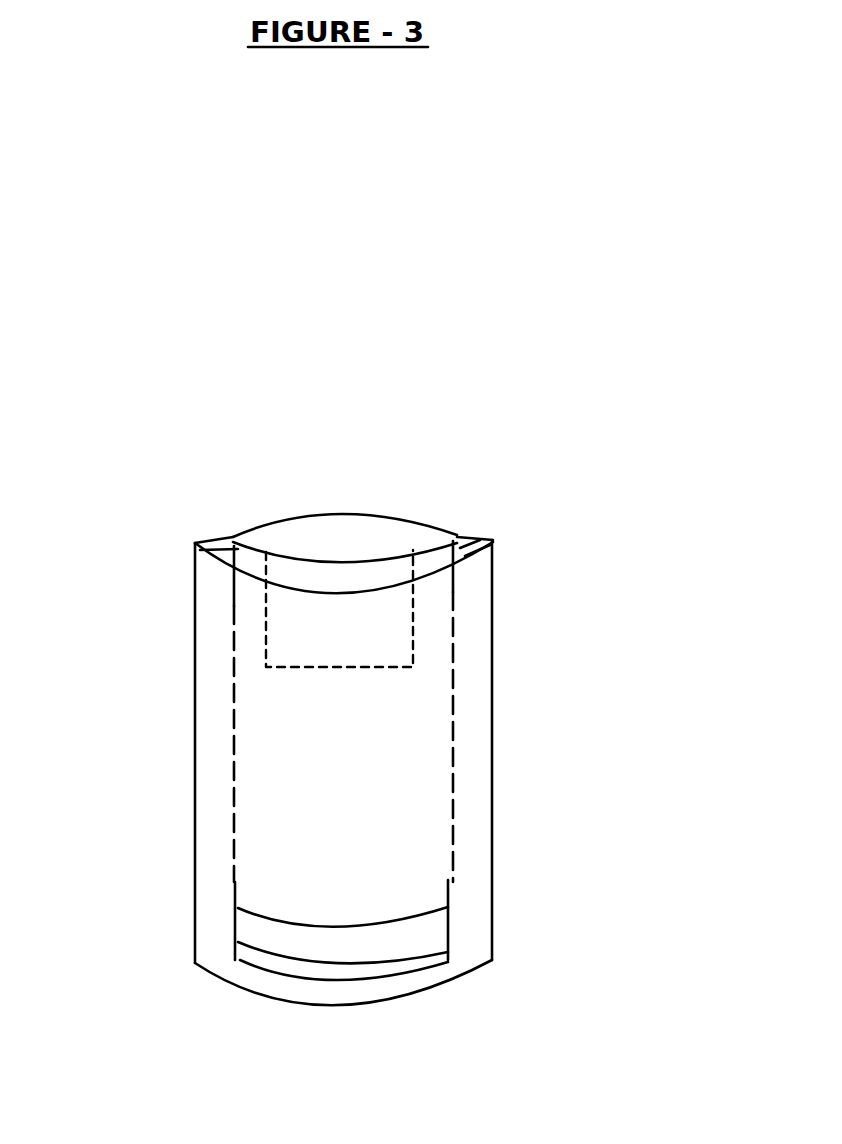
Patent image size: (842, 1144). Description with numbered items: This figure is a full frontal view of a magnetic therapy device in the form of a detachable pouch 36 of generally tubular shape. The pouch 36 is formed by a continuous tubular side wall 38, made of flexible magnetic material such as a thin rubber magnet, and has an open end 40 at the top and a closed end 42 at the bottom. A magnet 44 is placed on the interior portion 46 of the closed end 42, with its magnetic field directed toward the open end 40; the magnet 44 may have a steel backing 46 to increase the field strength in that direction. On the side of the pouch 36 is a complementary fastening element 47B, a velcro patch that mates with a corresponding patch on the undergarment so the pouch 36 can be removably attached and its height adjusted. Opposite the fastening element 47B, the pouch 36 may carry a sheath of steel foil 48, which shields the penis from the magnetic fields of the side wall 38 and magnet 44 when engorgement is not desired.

The detachable pouch 36 is at (480, 457).
The tubular side wall 38 is at (273, 513).
The open end 40 is at (347, 527).
The complementary fastening element 47B is at (335, 610).
The sheath of steel foil 48 is at (507, 648).
The magnet 44 is at (375, 933).
The interior portion 46 is at (417, 973).
The closed end 42 is at (337, 1004).